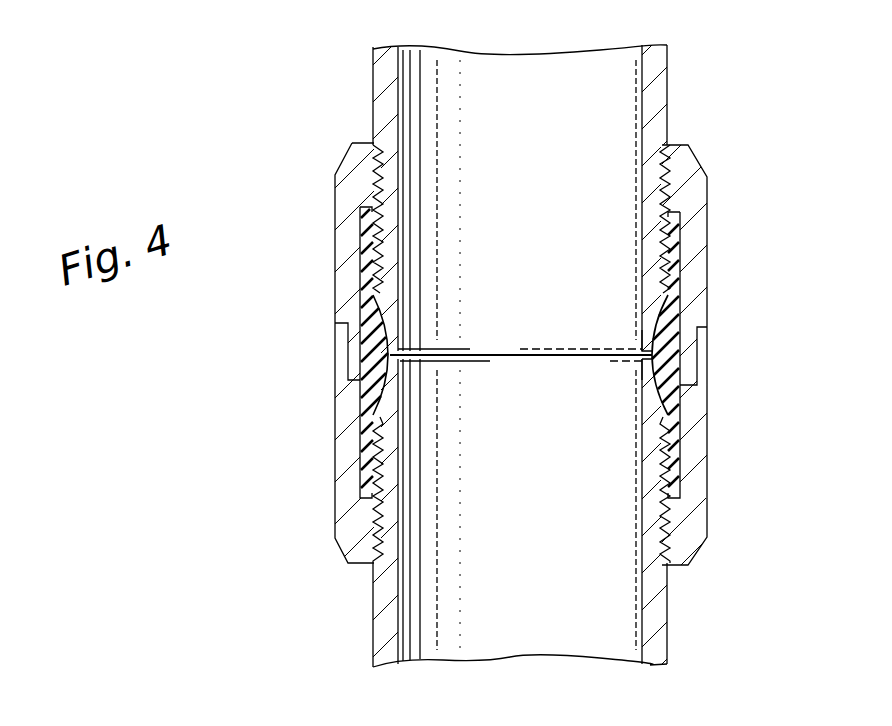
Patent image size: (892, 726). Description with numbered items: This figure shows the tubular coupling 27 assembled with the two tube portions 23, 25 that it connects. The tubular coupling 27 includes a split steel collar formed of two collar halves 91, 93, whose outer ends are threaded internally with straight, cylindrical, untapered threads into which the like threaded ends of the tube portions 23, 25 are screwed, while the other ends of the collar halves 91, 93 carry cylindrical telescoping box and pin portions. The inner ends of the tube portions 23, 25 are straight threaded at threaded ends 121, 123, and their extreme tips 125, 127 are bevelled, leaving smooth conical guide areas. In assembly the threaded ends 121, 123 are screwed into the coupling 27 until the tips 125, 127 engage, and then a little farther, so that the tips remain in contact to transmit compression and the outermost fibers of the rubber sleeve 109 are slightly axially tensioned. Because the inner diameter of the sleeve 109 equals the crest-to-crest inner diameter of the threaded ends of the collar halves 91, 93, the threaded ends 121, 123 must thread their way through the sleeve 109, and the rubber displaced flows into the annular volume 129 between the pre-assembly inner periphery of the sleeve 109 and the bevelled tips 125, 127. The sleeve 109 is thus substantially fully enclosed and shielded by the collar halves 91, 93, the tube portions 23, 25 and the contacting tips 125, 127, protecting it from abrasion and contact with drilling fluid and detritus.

The tube portion 25 is at (658, 87).
The tube portion 23 is at (667, 630).
The tubular coupling 27 is at (563, 354).
The collar half 93 is at (697, 197).
The collar half 91 is at (700, 450).
The sleeve 109 is at (672, 250).
The threaded end 121 is at (667, 545).
The threaded end 123 is at (663, 165).
The tip 125 is at (652, 378).
The tip 127 is at (652, 333).
The annular volume 129 is at (655, 357).